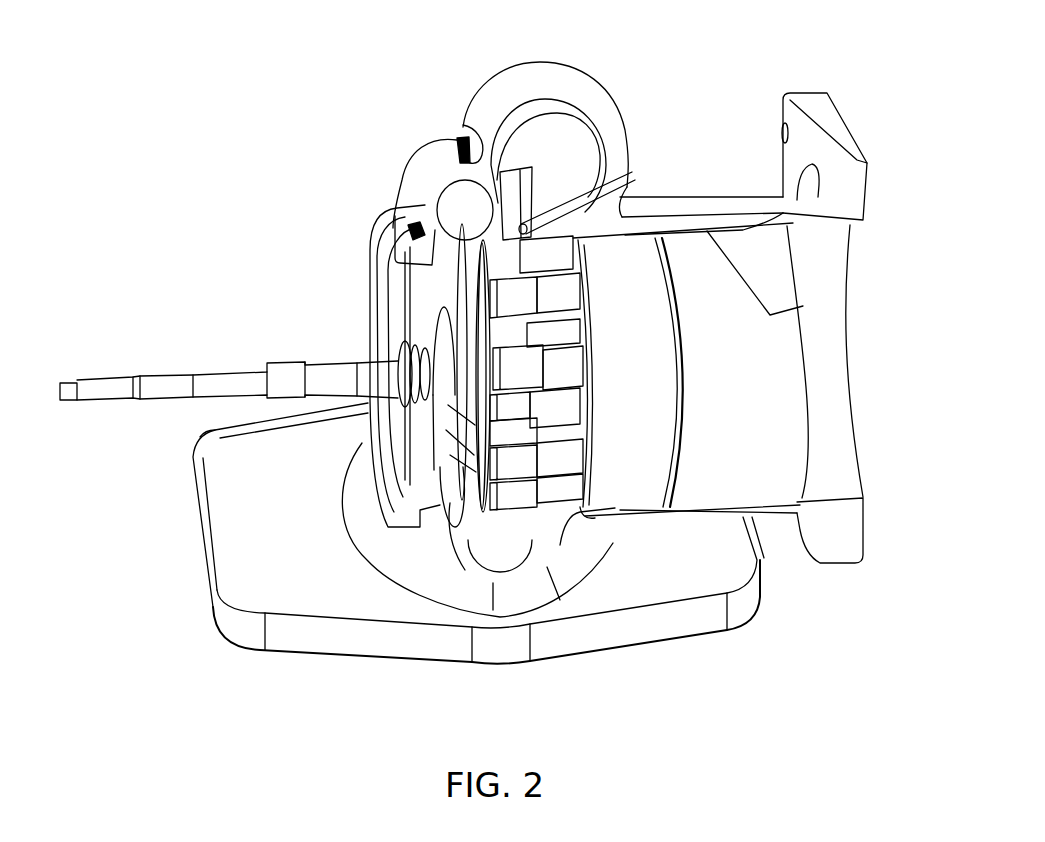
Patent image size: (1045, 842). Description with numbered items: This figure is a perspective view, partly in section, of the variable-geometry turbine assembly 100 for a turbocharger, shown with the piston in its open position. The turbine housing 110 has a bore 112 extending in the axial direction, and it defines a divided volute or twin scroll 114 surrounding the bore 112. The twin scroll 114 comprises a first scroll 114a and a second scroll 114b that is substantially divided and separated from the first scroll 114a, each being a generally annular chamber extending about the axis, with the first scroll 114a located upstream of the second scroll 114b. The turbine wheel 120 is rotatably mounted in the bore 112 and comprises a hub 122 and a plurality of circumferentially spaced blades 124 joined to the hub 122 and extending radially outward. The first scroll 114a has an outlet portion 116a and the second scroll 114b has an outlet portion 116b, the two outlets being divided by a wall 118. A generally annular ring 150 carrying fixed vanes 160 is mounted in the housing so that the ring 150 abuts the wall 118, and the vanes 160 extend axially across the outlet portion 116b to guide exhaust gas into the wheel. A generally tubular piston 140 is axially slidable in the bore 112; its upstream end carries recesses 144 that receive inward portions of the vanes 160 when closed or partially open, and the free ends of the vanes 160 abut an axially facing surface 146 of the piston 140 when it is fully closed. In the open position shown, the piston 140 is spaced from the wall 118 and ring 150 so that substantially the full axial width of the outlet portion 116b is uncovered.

The variable-geometry turbine assembly 100 is at (342, 95).
The turbine housing 110 is at (770, 510).
The bore 112 is at (803, 306).
The twin scroll 114 is at (460, 86).
The first scroll 114a is at (450, 207).
The second scroll 114b is at (530, 133).
The outlet portion of the first scroll 116a is at (446, 490).
The outlet portion of the second scroll 116b is at (573, 282).
The wall 118 is at (473, 235).
The turbine wheel 120 is at (408, 307).
The hub 122 is at (433, 340).
The blades 124 is at (470, 432).
The piston 140 is at (820, 442).
The recesses 144 is at (552, 262).
The axially facing surface 146 is at (565, 495).
The ring 150 is at (483, 503).
The fixed vanes 160 is at (525, 442).